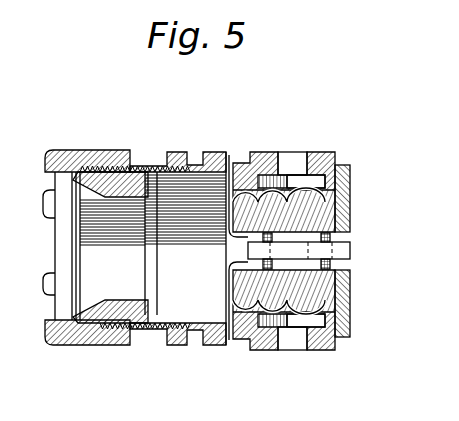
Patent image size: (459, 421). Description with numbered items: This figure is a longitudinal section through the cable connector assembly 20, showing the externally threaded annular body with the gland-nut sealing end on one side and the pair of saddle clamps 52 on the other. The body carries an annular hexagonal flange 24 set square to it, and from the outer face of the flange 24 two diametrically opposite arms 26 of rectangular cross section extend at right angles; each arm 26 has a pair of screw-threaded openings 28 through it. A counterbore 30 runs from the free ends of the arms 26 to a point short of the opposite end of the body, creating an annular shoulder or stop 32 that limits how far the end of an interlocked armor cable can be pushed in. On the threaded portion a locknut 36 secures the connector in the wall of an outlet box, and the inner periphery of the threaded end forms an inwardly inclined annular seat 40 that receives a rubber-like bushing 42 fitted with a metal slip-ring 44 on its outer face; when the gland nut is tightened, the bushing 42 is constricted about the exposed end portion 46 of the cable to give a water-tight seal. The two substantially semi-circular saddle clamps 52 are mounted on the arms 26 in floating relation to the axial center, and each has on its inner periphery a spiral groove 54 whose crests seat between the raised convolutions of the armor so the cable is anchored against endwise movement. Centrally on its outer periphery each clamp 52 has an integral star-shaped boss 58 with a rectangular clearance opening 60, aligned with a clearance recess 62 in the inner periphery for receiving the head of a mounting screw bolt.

The cable connector assembly 20 is at (258, 138).
The annular hexagonal flange 24 is at (193, 346).
The arms 26 is at (340, 257).
The screw-threaded openings 28 is at (336, 239).
The counterbore 30 is at (214, 343).
The annular shoulder or stop 32 is at (163, 315).
The locknut 36 is at (178, 151).
The inwardly inclined annular seat 40 is at (124, 316).
The rubber-like bushing 42 is at (92, 178).
The metal slip-ring 44 is at (79, 167).
The exposed end portion of cable 46 is at (64, 338).
The saddle clamps 52 is at (345, 188).
The spiral groove 54 is at (342, 216).
The star-shaped boss 58 is at (335, 151).
The rectangular clearance opening 60 is at (292, 160).
The clearance recess 62 is at (312, 182).